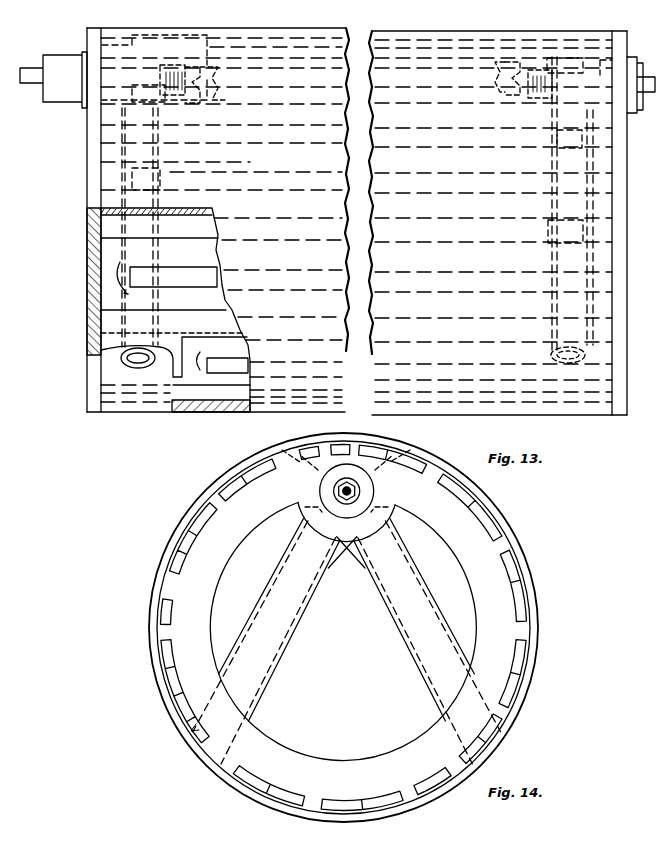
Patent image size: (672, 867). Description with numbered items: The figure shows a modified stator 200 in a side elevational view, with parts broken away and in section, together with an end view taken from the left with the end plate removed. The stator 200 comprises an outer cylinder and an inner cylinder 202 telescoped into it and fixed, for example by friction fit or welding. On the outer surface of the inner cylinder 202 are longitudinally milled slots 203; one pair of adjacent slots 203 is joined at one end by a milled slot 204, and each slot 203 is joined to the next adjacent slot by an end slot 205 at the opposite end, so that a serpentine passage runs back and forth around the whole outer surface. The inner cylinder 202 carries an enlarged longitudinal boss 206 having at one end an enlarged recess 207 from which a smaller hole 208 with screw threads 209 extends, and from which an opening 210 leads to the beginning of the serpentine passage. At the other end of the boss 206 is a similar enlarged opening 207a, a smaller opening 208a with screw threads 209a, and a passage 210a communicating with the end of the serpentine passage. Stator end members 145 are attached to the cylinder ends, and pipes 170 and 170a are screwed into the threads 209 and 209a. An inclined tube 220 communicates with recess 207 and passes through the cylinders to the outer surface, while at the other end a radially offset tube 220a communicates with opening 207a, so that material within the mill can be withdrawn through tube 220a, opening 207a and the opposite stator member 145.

In FIG. 13, the stator end member 145 is at (82, 390).
In FIG. 13, the pipe 170 is at (35, 70).
In FIG. 13, the pipe 170a is at (638, 108).
In FIG. 14, the stator 200 is at (494, 505).
In FIG. 14, the inner cylinder 202 is at (498, 550).
In FIG. 13, the longitudinally milled slots 203 is at (121, 160).
In FIG. 14, the longitudinally milled slots 203 is at (522, 660).
In FIG. 13, the milled slot 204 is at (95, 215).
In FIG. 14, the milled slot 204 is at (515, 690).
In FIG. 13, the end slot 205 is at (600, 160).
In FIG. 14, the longitudinal boss 206 is at (350, 556).
In FIG. 13, the enlarged recess 207 is at (100, 45).
In FIG. 13, the enlarged opening 207a is at (616, 62).
In FIG. 13, the smaller hole 208 is at (205, 92).
In FIG. 13, the smaller opening 208a is at (502, 95).
In FIG. 13, the screw threads 209 is at (180, 95).
In FIG. 13, the screw threads 209a is at (530, 98).
In FIG. 13, the opening 210 is at (220, 72).
In FIG. 14, the opening 210 is at (282, 450).
In FIG. 13, the passage 210a is at (500, 70).
In FIG. 14, the passage 210a is at (410, 450).
In FIG. 13, the inclined tube 220 is at (120, 252).
In FIG. 14, the inclined tube 220 is at (412, 655).
In FIG. 13, the tube 220a is at (552, 330).
In FIG. 14, the tube 220a is at (275, 655).